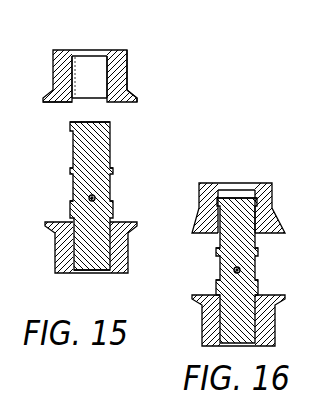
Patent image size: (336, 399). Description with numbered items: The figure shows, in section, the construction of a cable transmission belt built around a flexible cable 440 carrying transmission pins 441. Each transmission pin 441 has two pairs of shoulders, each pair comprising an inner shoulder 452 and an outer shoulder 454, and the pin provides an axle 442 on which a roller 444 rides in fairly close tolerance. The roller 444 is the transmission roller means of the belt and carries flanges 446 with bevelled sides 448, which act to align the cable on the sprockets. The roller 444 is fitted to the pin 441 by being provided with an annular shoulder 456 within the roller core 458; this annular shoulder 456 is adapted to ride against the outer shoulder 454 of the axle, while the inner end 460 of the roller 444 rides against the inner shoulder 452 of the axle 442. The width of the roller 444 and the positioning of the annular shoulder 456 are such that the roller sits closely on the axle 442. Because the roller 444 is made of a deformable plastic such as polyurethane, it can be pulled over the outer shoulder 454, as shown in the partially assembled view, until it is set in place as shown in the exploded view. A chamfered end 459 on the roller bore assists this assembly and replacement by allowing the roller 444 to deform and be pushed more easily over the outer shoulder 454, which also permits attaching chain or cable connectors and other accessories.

In FIG. 15, the flexible cable 440 is at (100, 198).
In FIG. 15, the transmission pin 441 is at (60, 192).
In FIG. 16, the transmission pin 441 is at (265, 282).
In FIG. 15, the axle 442 is at (76, 148).
In FIG. 16, the axle 442 is at (269, 257).
In FIG. 15, the transmission roller means 444 is at (55, 64).
In FIG. 16, the transmission roller means 444 is at (270, 216).
In FIG. 15, the flange 446 is at (135, 99).
In FIG. 15, the bevelled side 448 is at (128, 88).
In FIG. 15, the inner shoulder 452 is at (72, 171).
In FIG. 16, the inner shoulder 452 is at (258, 244).
In FIG. 15, the outer shoulder 454 is at (110, 130).
In FIG. 16, the outer shoulder 454 is at (272, 202).
In FIG. 15, the annular shoulder 456 is at (107, 52).
In FIG. 15, the roller core 458 is at (103, 68).
In FIG. 15, the chamfered end 459 is at (108, 101).
In FIG. 16, the chamfered end 459 is at (218, 238).
In FIG. 15, the inner end 460 is at (60, 103).